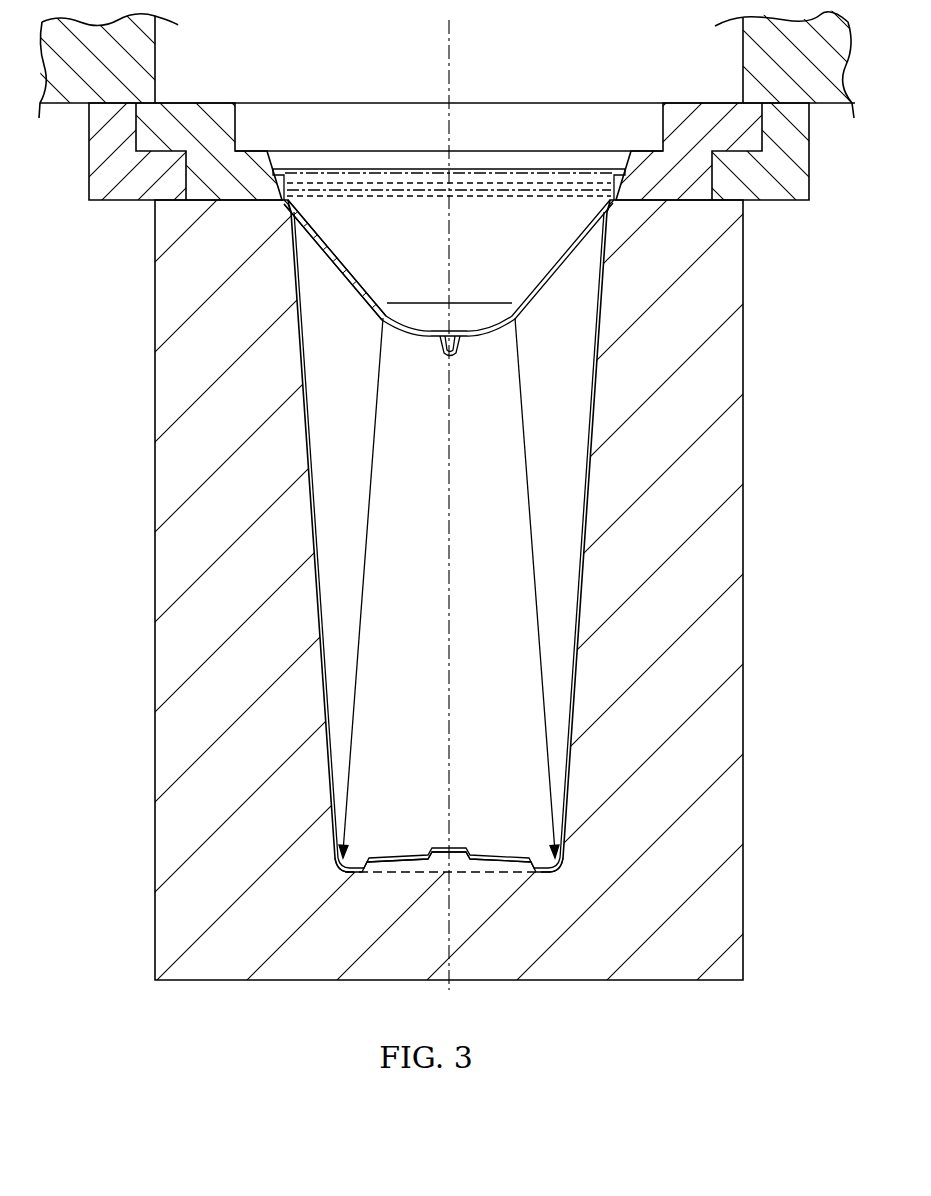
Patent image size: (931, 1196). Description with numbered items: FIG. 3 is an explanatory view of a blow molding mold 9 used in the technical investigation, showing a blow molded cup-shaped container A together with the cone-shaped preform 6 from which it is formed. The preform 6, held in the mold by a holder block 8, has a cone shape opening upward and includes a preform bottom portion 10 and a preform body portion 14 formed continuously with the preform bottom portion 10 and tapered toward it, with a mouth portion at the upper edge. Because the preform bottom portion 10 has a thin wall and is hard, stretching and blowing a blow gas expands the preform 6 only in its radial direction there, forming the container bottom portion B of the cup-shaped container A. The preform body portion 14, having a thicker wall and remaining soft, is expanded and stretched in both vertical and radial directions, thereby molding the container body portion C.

The preform 6 is at (563, 265).
The holder block 8 is at (177, 124).
The blow molding mold 9 is at (155, 247).
The preform bottom portion 10 is at (437, 335).
The preform body portion 14 is at (344, 265).
The cup-shaped container A is at (580, 480).
The container bottom portion B is at (391, 853).
The container body portion C is at (574, 650).